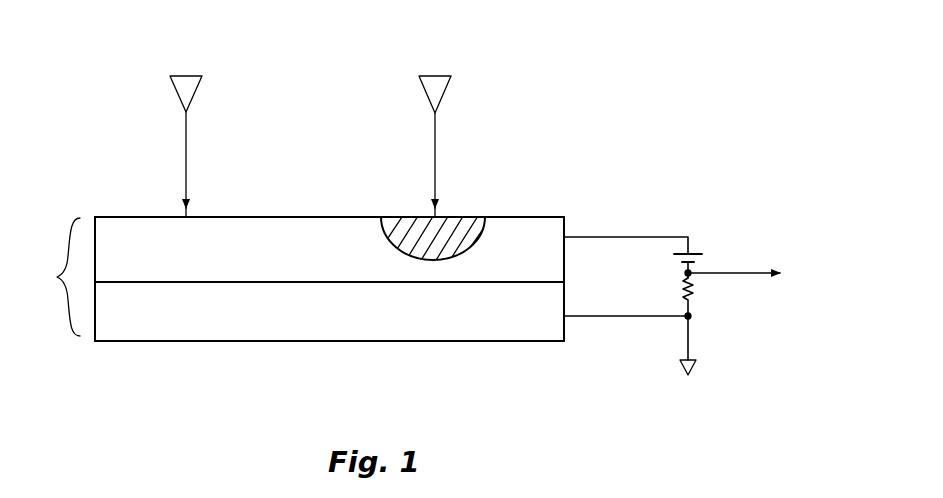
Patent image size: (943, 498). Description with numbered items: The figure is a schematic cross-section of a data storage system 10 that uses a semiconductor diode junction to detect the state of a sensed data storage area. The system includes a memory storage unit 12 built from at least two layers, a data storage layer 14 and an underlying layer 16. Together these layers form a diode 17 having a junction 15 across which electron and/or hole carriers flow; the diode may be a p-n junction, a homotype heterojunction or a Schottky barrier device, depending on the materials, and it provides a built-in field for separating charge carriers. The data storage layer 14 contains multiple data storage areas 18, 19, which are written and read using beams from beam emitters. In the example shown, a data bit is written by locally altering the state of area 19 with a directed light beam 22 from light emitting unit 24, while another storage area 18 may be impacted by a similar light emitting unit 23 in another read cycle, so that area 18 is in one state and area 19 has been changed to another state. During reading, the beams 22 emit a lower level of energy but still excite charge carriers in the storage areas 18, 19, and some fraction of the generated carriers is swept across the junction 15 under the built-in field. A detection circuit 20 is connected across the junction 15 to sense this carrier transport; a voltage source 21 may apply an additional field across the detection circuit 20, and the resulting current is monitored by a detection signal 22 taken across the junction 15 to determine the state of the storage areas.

The data storage system 10 is at (630, 78).
The memory storage unit 12 is at (557, 195).
The data storage layer 14 is at (119, 216).
The junction 15 is at (403, 282).
The layer 16 is at (512, 342).
The diode 17 is at (52, 277).
The data storage area 18 is at (209, 214).
The data storage area 19 is at (452, 211).
The detection circuit 20 is at (710, 224).
The voltage source 21 is at (704, 255).
The light beam 22 is at (187, 140).
The light emitting unit 23 is at (187, 86).
The light emitting unit 24 is at (436, 86).